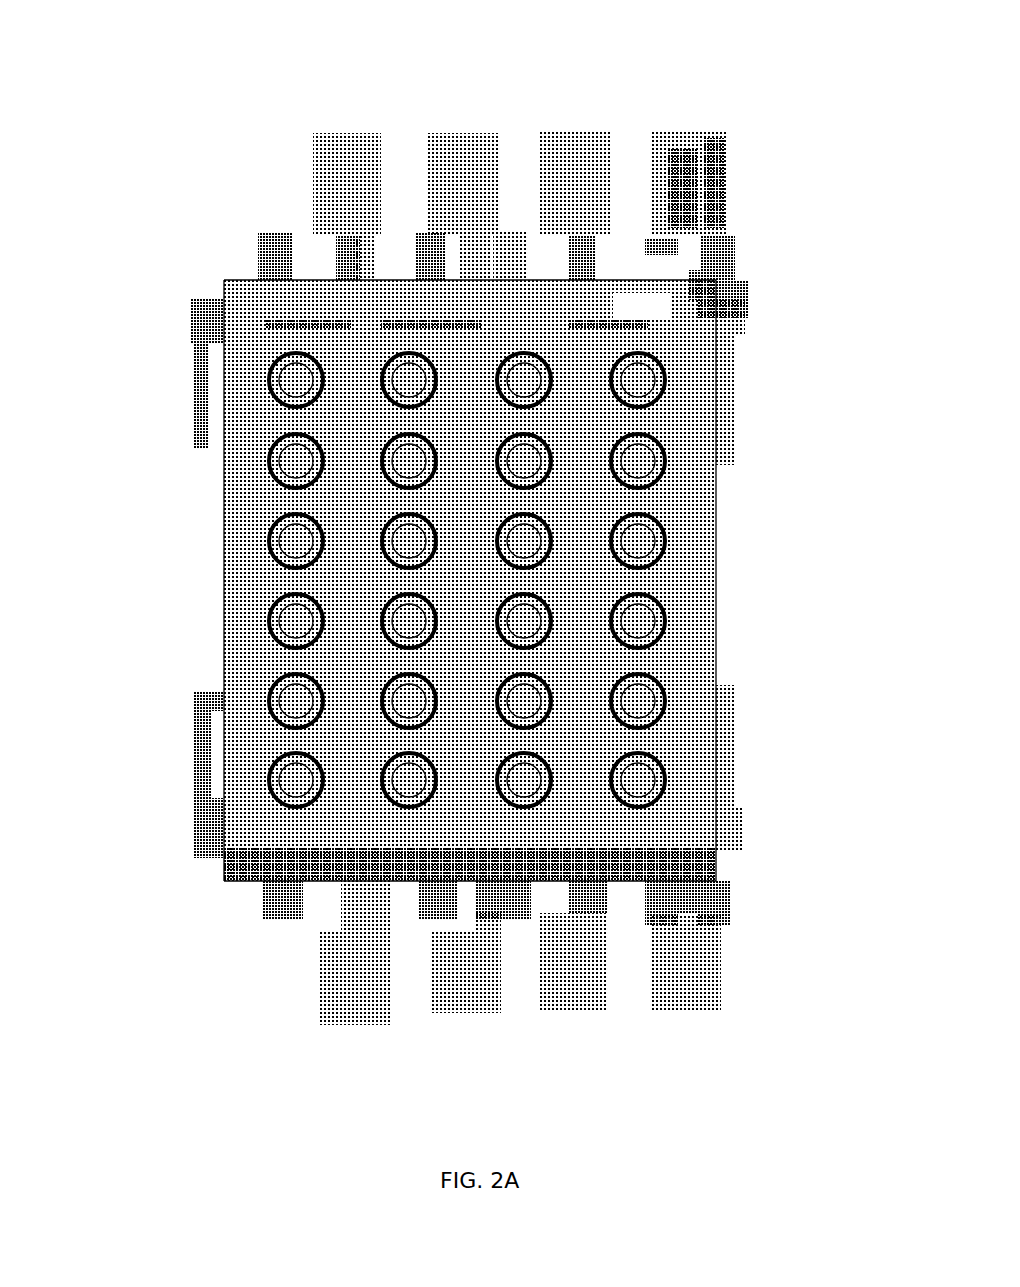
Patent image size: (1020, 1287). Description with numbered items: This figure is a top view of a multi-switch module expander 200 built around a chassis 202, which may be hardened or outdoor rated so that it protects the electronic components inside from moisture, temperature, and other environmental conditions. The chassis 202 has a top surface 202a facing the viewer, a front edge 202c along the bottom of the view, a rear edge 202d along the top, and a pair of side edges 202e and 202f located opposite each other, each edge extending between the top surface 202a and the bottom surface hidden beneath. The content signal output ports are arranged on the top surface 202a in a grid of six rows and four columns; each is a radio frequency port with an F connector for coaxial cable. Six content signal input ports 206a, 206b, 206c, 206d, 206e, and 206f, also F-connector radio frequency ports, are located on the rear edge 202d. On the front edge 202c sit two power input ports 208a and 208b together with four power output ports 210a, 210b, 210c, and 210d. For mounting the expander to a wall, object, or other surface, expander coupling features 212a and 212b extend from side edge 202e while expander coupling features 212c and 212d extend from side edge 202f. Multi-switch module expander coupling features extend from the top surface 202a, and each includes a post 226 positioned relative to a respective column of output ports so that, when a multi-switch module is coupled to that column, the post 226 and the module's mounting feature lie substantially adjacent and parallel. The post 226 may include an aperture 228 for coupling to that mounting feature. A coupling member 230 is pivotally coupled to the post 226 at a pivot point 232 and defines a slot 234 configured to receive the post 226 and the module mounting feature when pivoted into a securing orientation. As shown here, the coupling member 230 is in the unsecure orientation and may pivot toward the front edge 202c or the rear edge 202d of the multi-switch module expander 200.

The multi-switch module expander 200 is at (469, 566).
The chassis 202 is at (220, 273).
The top surface 202a is at (235, 525).
The front edge 202c is at (248, 872).
The rear edge 202d is at (240, 270).
The side edge 202e is at (220, 605).
The side edge 202f is at (712, 588).
The content signal input port 206a is at (272, 228).
The content signal input port 206b is at (328, 262).
The content signal input port 206c is at (400, 237).
The content signal input port 206d is at (500, 224).
The content signal input port 206e is at (558, 260).
The content signal input port 206f is at (642, 237).
The power input port 208a is at (412, 908).
The power input port 208b is at (493, 910).
The power output port 210a is at (255, 903).
The power output port 210b is at (332, 888).
The power output port 210c is at (598, 882).
The power output port 210d is at (667, 895).
The expander coupling feature 212a is at (195, 740).
The expander coupling feature 212b is at (192, 380).
The expander coupling feature 212c is at (715, 737).
The expander coupling feature 212d is at (723, 407).
The post 226 is at (718, 268).
The aperture 228 is at (693, 267).
The coupling member 230 is at (705, 143).
The pivot point 232 is at (668, 290).
The slot 234 is at (678, 170).